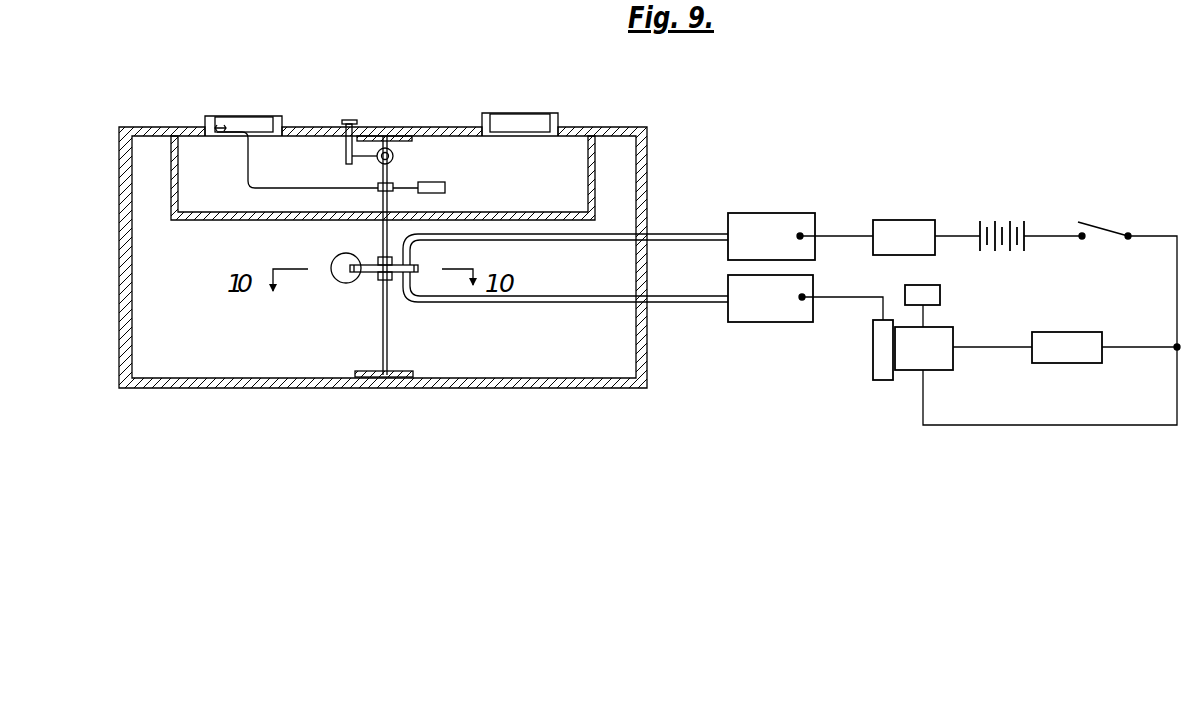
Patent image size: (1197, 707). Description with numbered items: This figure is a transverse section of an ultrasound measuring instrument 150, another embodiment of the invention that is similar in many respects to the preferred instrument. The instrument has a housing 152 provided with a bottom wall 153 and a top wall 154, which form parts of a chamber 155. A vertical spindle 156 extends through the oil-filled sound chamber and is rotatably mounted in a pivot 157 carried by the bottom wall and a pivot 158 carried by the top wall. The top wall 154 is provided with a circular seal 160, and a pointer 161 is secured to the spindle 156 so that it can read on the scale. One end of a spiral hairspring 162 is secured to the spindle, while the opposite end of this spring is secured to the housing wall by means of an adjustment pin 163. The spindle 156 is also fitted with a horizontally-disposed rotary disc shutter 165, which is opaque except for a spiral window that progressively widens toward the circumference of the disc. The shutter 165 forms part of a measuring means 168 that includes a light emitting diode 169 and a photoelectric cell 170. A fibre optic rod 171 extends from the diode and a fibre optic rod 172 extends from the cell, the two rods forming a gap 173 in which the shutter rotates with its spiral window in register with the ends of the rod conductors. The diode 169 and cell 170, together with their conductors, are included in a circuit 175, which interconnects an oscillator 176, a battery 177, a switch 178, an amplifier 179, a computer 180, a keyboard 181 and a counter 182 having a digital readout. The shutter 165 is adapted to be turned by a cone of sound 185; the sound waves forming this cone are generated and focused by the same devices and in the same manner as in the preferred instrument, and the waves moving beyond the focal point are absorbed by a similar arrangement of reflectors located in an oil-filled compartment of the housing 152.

The ultrasound measuring instrument 150 is at (592, 96).
The housing 152 is at (648, 158).
The bottom wall 153 is at (440, 384).
The top wall 154 is at (462, 128).
The chamber 155 is at (543, 364).
The vertical spindle 156 is at (383, 320).
The pivot 157 is at (378, 378).
The pivot 158 is at (388, 134).
The circular seal 160 is at (226, 116).
The pointer 161 is at (248, 160).
The spiral hairspring 162 is at (394, 157).
The adjustment pin 163 is at (345, 120).
The rotary disc shutter 165 is at (419, 268).
The measuring means 168 is at (697, 212).
The light emitting diode 169 is at (783, 216).
The photoelectric cell 170 is at (776, 312).
The fibre optic rod 171 is at (557, 240).
The fibre optic rod 172 is at (567, 302).
The gap 173 is at (398, 284).
The circuit 175 is at (1083, 172).
The oscillator 176 is at (905, 222).
The battery 177 is at (1016, 226).
The switch 178 is at (1110, 226).
The amplifier 179 is at (875, 352).
The computer 180 is at (945, 364).
The keyboard 181 is at (939, 296).
The counter 182 is at (1080, 356).
The cone of sound 185 is at (341, 262).